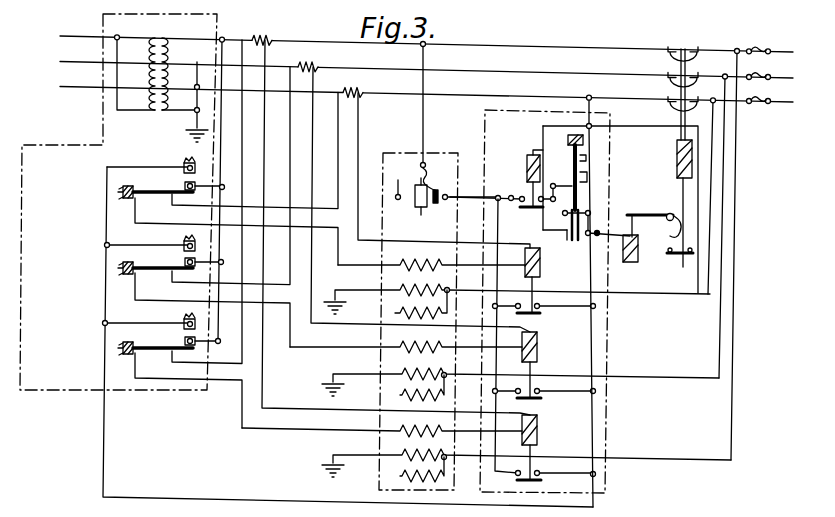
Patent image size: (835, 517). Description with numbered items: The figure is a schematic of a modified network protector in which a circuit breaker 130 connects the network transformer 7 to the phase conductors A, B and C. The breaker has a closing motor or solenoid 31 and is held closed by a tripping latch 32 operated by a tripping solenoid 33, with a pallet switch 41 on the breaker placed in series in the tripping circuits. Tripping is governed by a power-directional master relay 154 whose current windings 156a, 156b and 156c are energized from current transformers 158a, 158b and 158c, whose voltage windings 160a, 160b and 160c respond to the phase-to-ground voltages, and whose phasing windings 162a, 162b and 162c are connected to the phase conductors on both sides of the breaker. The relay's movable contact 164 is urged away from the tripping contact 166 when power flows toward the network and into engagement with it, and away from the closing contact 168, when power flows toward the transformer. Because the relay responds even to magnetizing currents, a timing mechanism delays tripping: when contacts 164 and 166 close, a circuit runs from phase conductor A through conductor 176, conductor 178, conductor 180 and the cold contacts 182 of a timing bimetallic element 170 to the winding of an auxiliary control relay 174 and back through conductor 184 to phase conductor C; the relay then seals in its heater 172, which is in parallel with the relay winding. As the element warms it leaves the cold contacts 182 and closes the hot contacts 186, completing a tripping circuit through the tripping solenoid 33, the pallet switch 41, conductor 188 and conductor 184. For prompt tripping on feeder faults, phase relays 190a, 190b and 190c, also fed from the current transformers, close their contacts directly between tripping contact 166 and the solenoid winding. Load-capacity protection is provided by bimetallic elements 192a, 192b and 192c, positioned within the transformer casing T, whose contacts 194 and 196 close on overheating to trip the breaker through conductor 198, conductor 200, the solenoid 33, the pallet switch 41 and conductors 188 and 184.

The network transformer 7 is at (176, 42).
The circuit breaker 130 is at (685, 42).
The current transformer 158a is at (253, 36).
The current transformer 158b is at (316, 63).
The current transformer 158c is at (361, 90).
The conductor 198 is at (221, 160).
The conductor 176 is at (428, 133).
The master relay 154 is at (409, 157).
The closing contact 168 is at (397, 180).
The tripping contact 166 is at (465, 180).
The movable contact 164 is at (424, 203).
The bimetallic element 192c is at (160, 187).
The bimetallic element 192b is at (160, 264).
The bimetallic element 192a is at (160, 352).
The contact 194 is at (186, 324).
The contact 196 is at (185, 340).
The current winding 156c is at (392, 265).
The voltage winding 160c is at (393, 290).
The phasing winding 162c is at (395, 313).
The current winding 156b is at (400, 347).
The voltage winding 160b is at (403, 372).
The phasing winding 162b is at (400, 395).
The current winding 156a is at (400, 431).
The voltage winding 160a is at (403, 456).
The phasing winding 162a is at (398, 478).
The auxiliary control relay 174 is at (527, 156).
The conductor 178 is at (542, 145).
The conductor 180 is at (543, 222).
The cold contacts 182 is at (567, 236).
The hot contacts 186 is at (578, 243).
The phase relay 190c is at (540, 272).
The phase relay 190b is at (538, 355).
The phase relay 190a is at (538, 437).
The timing bimetallic element 170 is at (587, 158).
The heater 172 is at (588, 175).
The conductor 184 is at (600, 112).
The closing motor or solenoid 31 is at (677, 159).
The tripping latch 32 is at (654, 218).
The tripping solenoid 33 is at (631, 263).
The pallet switch 41 is at (680, 258).
The conductor 188 is at (705, 188).
The transformer casing T is at (75, 392).
The conductor 200 is at (103, 443).
The phase conductor A is at (426, 40).
The phase conductor B is at (426, 67).
The phase conductor C is at (426, 92).